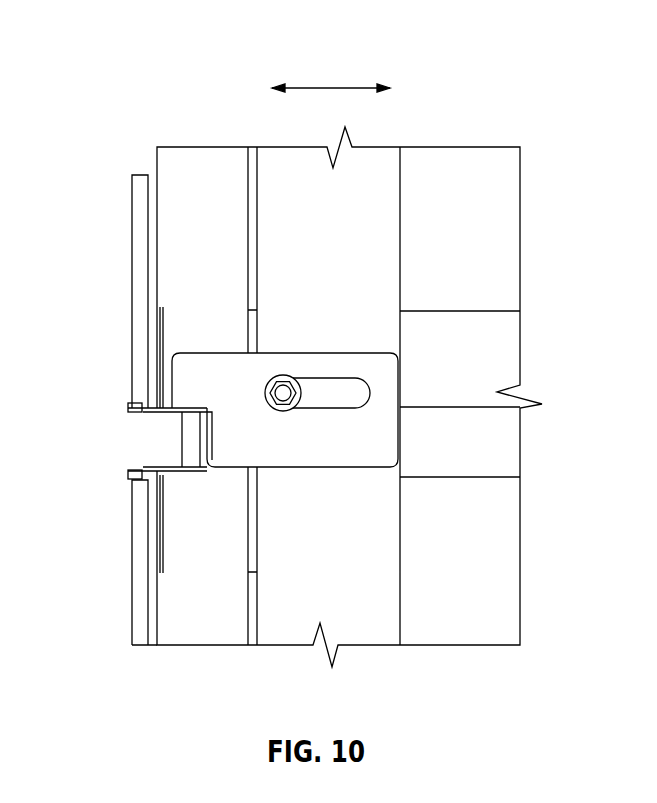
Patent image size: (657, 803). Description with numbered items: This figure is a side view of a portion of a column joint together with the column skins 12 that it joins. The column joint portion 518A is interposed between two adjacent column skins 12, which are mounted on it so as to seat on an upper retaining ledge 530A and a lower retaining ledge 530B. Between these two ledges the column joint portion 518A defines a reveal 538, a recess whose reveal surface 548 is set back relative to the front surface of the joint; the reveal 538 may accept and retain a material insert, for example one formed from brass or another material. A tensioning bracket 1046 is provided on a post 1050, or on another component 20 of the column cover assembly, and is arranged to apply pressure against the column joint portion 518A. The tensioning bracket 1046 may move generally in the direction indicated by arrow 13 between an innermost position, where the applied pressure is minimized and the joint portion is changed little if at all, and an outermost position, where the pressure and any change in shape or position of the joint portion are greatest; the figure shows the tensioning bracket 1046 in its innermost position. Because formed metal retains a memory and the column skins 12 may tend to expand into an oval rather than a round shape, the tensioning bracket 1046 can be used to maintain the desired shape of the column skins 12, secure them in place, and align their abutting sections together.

The column skin 12 is at (137, 200).
The arrow 13 is at (343, 88).
The frame member 20 is at (502, 442).
The column joint portion 518A is at (502, 352).
The upper retaining ledge 530A is at (128, 407).
The lower retaining ledge 530B is at (128, 476).
The reveal 538 is at (118, 437).
The reveal surface 548 is at (193, 442).
The tensioning bracket 1046 is at (218, 362).
The post 1050 is at (367, 630).